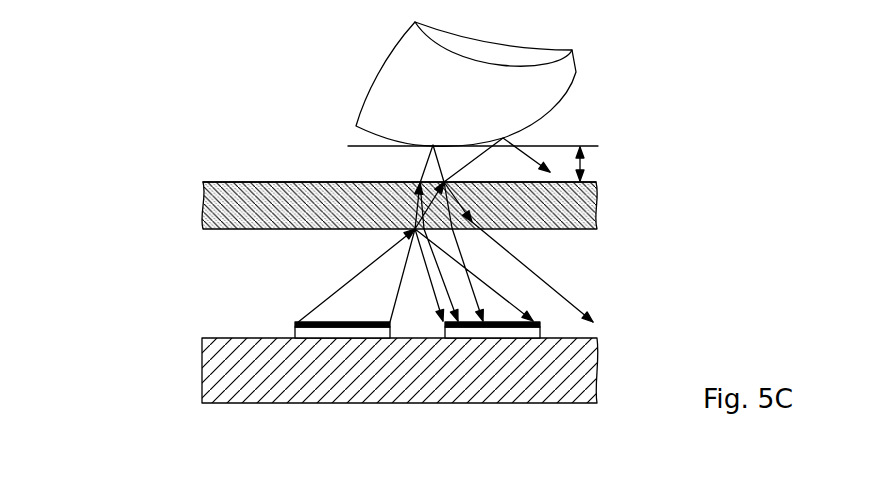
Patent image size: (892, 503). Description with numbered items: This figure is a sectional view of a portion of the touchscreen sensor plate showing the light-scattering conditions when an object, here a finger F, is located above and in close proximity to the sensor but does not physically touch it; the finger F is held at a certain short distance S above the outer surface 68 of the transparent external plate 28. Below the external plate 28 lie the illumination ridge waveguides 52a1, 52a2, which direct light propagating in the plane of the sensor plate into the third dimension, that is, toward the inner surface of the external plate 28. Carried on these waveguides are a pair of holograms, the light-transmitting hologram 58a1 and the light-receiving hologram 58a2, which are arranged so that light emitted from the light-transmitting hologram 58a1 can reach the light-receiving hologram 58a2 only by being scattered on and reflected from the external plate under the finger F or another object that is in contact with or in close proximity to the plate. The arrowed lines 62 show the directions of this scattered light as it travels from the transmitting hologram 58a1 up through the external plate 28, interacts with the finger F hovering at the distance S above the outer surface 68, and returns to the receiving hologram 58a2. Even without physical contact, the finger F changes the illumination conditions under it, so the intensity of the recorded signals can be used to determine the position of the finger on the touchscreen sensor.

The finger F is at (573, 75).
The short distance S is at (588, 157).
The external plate 28 is at (232, 210).
The outer surface 68 is at (220, 181).
The arrowed lines 62 is at (632, 258).
The illumination ridge waveguide 52a1 is at (322, 333).
The illumination ridge waveguide 52a2 is at (485, 330).
The light-transmitting hologram 58a1 is at (335, 322).
The light-receiving hologram 58a2 is at (503, 323).